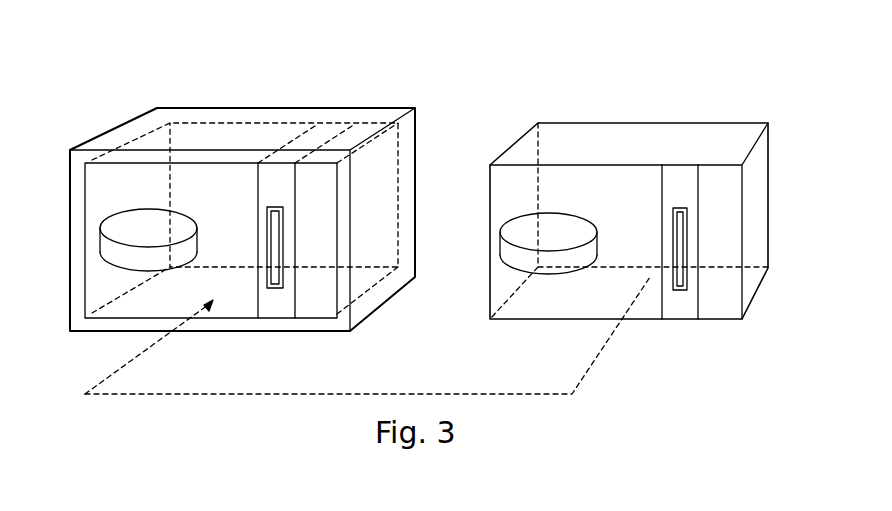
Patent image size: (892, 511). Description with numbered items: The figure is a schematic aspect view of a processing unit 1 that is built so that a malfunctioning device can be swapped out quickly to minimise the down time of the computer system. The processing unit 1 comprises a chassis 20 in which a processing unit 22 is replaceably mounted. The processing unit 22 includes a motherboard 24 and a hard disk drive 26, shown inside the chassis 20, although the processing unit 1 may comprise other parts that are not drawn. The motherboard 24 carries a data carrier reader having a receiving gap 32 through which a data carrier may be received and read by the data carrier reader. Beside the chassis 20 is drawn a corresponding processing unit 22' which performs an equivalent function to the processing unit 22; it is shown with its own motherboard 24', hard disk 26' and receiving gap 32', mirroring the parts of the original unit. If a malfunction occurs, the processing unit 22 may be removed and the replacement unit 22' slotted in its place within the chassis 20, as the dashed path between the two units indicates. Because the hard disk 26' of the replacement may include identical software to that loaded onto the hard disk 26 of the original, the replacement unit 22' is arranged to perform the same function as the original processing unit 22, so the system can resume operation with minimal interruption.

The processing unit 1 is at (413, 87).
The chassis 20 is at (170, 108).
The processing unit 22 is at (367, 258).
The motherboard 24 is at (281, 221).
The hard disk drive 26 is at (168, 255).
The receiving gap 32 is at (301, 244).
The corresponding processing unit 22' is at (632, 200).
The second door 24' is at (666, 271).
The second disc 26' is at (576, 230).
The second slot 32' is at (708, 239).